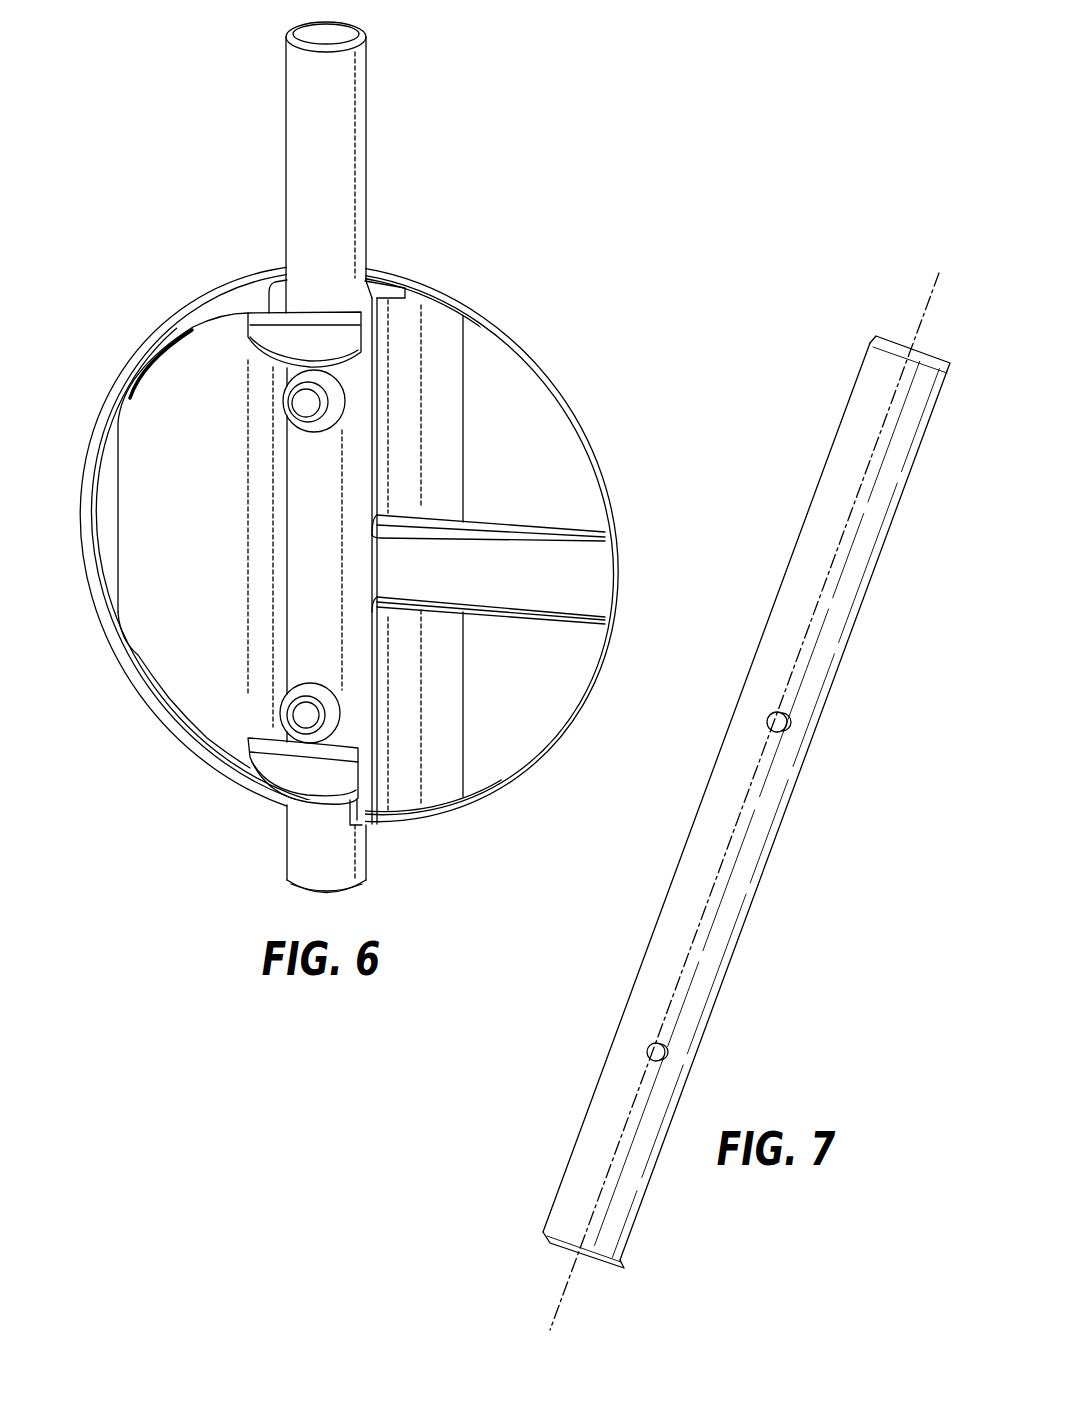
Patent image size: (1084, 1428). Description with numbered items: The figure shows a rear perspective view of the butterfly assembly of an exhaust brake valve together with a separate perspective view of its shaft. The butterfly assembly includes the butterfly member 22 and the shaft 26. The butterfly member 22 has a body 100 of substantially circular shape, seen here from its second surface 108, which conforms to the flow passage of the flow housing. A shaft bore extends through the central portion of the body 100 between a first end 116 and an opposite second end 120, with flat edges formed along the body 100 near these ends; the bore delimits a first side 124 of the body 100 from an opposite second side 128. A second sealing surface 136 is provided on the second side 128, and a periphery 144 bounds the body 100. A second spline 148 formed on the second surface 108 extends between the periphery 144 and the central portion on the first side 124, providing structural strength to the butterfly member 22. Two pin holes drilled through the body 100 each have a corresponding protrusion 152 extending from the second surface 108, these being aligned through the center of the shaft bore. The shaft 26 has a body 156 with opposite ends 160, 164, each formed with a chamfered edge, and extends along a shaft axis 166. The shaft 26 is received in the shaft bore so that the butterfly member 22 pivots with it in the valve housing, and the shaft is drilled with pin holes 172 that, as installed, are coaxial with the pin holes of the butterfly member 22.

In FIG. 6, the butterfly member 22 is at (143, 738).
In FIG. 6, the shaft 26 is at (330, 170).
In FIG. 7, the shaft 26 is at (704, 790).
In FIG. 6, the body 100 is at (525, 392).
In FIG. 6, the second surface 108 is at (185, 598).
In FIG. 6, the first end of the shaft bore 116 is at (332, 305).
In FIG. 6, the second end of the shaft bore 120 is at (300, 815).
In FIG. 6, the first side 124 is at (590, 410).
In FIG. 6, the second side 128 is at (85, 420).
In FIG. 6, the second sealing surface 136 is at (175, 323).
In FIG. 6, the periphery 144 is at (540, 760).
In FIG. 6, the second spline 148 is at (535, 575).
In FIG. 6, the protrusion 152 is at (315, 400).
In FIG. 7, the body of the shaft 156 is at (838, 490).
In FIG. 7, the end 160 is at (893, 352).
In FIG. 7, the end 164 is at (555, 1240).
In FIG. 7, the shaft axis 166 is at (928, 300).
In FIG. 7, the pin holes 172 is at (770, 722).